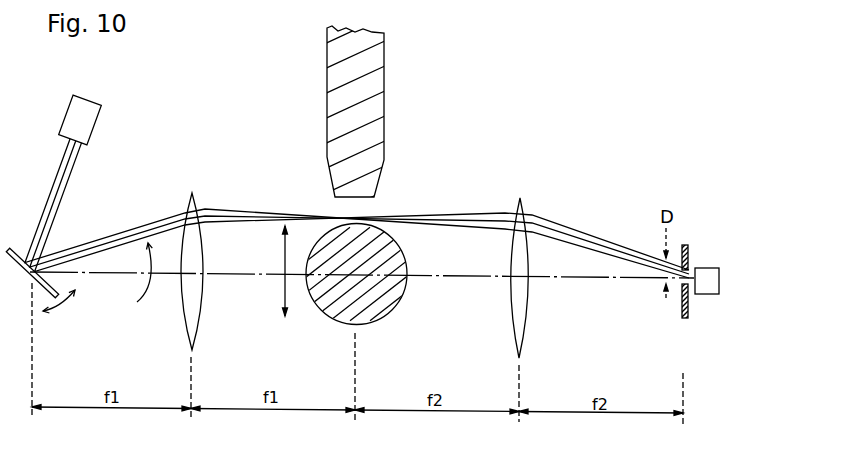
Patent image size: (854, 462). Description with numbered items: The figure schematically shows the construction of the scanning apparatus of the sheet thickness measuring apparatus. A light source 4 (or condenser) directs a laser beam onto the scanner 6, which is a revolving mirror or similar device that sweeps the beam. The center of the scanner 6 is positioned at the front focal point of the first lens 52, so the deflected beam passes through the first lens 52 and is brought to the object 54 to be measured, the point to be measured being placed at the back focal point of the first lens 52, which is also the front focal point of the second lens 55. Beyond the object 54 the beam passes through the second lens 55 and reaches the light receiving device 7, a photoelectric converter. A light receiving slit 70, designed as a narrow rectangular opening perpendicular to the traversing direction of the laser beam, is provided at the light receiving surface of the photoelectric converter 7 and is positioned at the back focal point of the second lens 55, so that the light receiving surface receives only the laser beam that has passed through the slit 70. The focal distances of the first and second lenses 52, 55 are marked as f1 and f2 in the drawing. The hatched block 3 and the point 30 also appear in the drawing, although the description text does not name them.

The object to be measured 3 is at (385, 97).
The light source 4 is at (101, 121).
The scanner 6 is at (17, 265).
The light receiving device 7 is at (712, 268).
The measuring point 30 is at (372, 206).
The first lens 52 is at (196, 199).
The object to be measured 54 is at (315, 304).
The second lens 55 is at (522, 200).
The light receiving slit 70 is at (678, 285).